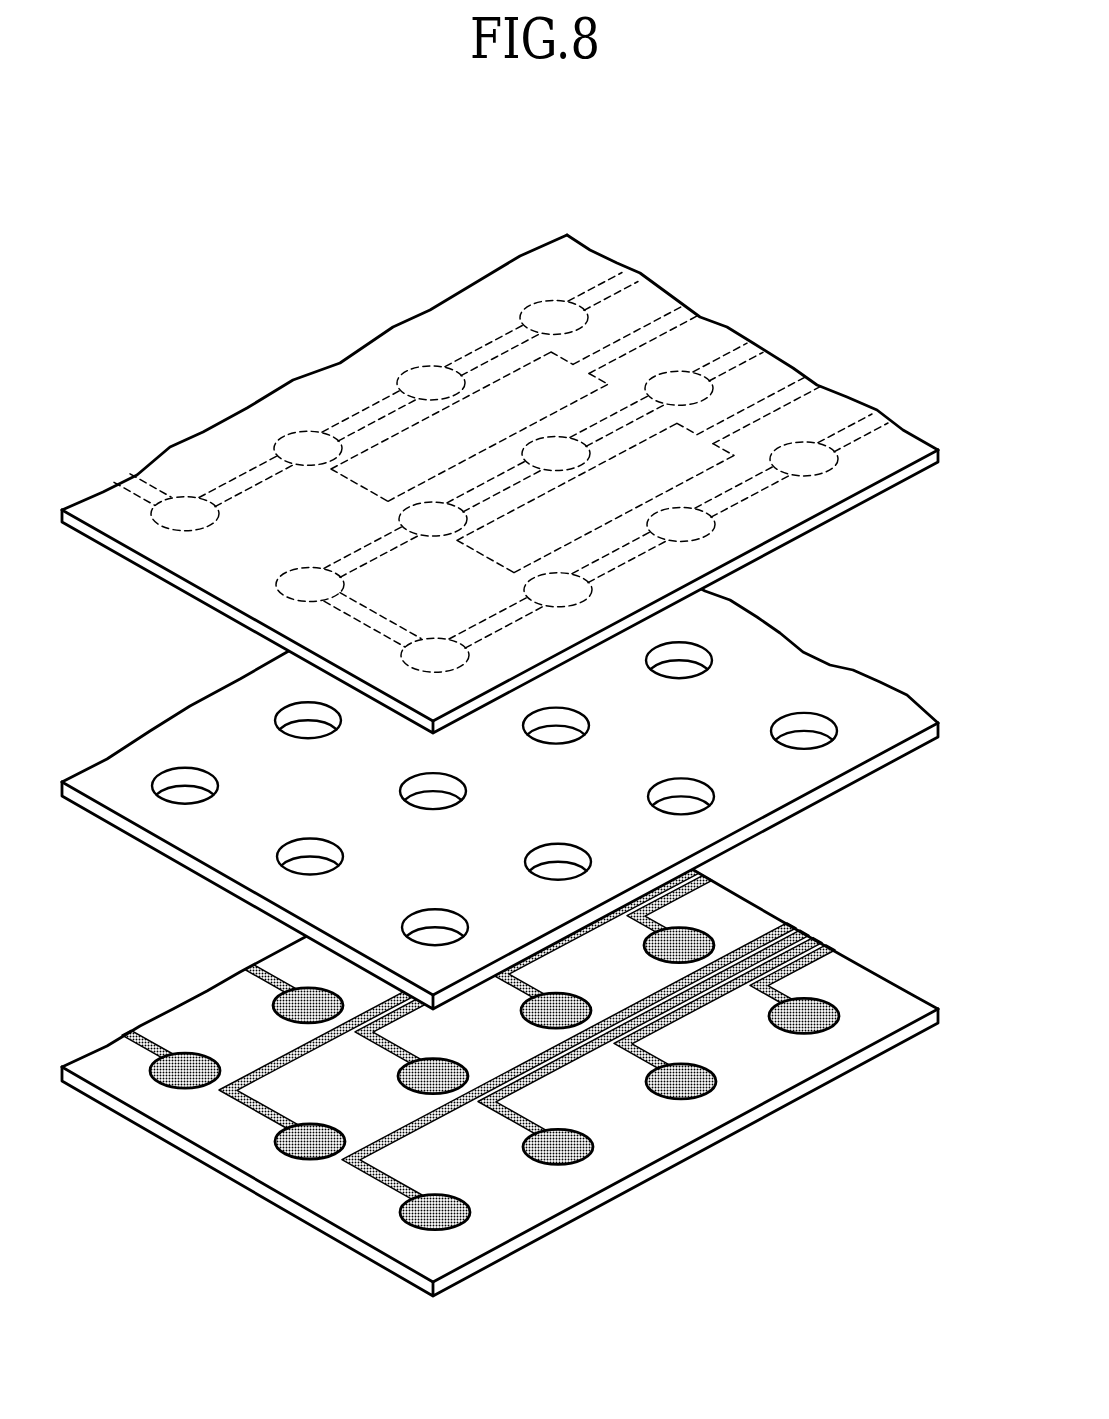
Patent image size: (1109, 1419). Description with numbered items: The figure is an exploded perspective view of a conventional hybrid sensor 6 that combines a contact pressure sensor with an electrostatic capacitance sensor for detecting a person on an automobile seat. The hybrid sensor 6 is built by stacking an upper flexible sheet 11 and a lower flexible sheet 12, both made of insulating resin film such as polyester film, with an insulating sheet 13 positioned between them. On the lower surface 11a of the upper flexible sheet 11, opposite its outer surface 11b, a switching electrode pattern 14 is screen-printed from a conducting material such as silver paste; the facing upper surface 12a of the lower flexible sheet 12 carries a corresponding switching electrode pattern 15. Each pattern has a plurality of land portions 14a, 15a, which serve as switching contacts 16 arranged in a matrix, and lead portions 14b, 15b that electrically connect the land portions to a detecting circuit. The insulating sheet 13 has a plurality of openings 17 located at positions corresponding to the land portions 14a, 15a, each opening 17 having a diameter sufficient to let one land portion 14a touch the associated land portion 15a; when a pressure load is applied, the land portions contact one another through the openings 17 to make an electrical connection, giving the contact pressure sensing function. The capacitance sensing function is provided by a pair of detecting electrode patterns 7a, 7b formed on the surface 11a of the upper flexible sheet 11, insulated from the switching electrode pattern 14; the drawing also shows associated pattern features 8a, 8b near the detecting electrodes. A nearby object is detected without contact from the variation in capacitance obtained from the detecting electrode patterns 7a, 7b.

The hybrid sensor 6 is at (762, 252).
The detecting electrode pattern 7a is at (390, 433).
The detecting electrode pattern 7b is at (736, 456).
The ink supply channel 8a is at (658, 319).
The ink supply channel 8b is at (775, 390).
The upper flexible sheet 11 is at (888, 480).
The lower surface of the upper flexible sheet 11a is at (842, 520).
The upper surface of channel plate 11b is at (892, 448).
The lower flexible sheet 12 is at (853, 1057).
The upper surface of the lower flexible sheet 12a is at (887, 1004).
The insulating sheet 13 is at (873, 768).
The switching electrode pattern 14 is at (537, 296).
The land portion 14a is at (411, 362).
The lead portion 14b is at (485, 342).
The switching electrode pattern 15 is at (590, 1158).
The land portion 15a is at (465, 1227).
The lead portion 15b is at (437, 1124).
The switching contact 16 is at (425, 657).
The opening 17 is at (428, 928).